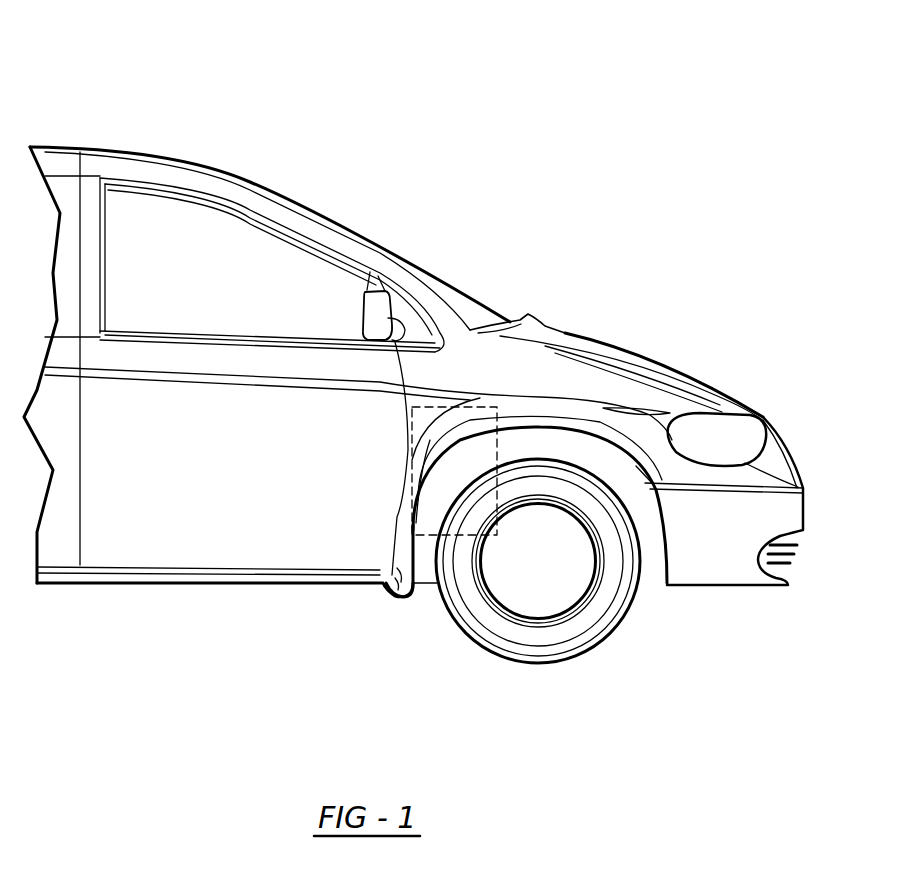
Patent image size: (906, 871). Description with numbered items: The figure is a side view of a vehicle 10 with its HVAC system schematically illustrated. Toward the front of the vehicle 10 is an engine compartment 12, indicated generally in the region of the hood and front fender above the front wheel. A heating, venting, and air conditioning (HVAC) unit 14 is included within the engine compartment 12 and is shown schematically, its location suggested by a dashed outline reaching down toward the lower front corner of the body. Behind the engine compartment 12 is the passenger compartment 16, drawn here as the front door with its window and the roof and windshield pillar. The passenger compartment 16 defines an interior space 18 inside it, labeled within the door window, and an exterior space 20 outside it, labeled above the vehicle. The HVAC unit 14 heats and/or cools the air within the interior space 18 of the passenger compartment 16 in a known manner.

The vehicle 10 is at (348, 88).
The engine compartment 12 is at (518, 374).
The HVAC unit 14 is at (407, 508).
The passenger compartment 16 is at (284, 262).
The interior space 18 is at (202, 285).
The exterior space 20 is at (640, 61).